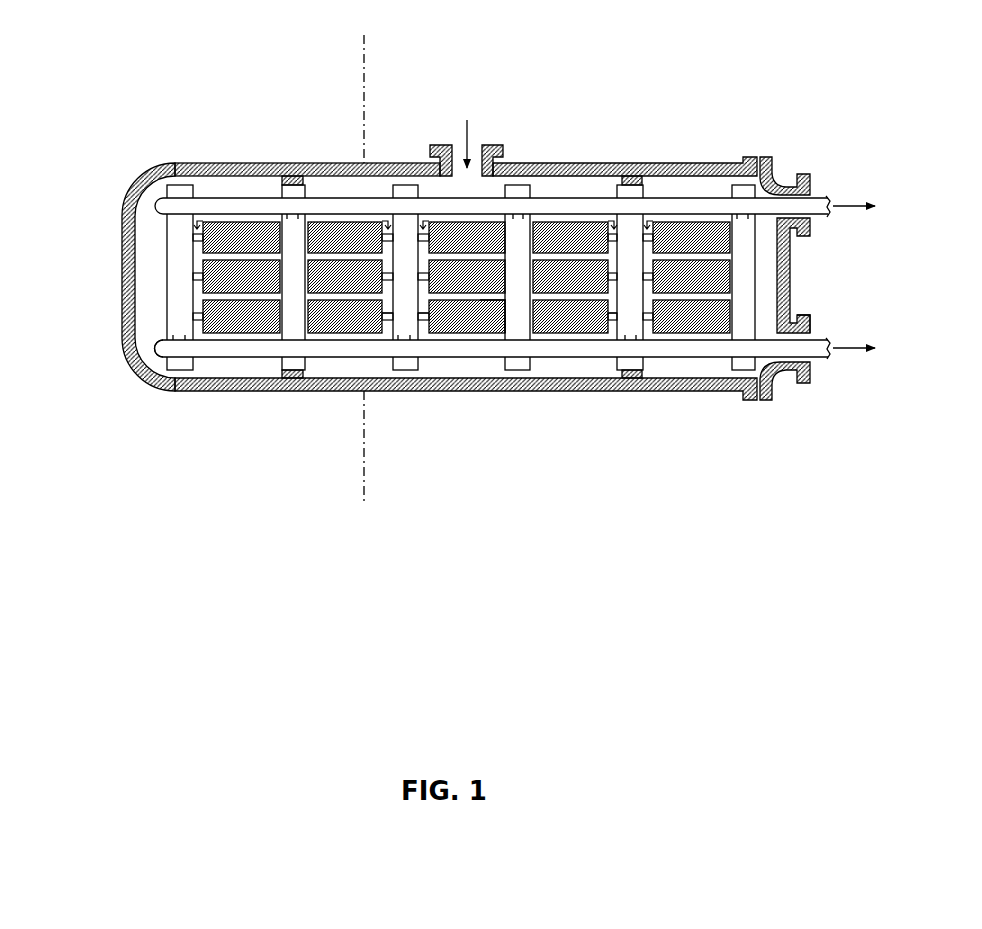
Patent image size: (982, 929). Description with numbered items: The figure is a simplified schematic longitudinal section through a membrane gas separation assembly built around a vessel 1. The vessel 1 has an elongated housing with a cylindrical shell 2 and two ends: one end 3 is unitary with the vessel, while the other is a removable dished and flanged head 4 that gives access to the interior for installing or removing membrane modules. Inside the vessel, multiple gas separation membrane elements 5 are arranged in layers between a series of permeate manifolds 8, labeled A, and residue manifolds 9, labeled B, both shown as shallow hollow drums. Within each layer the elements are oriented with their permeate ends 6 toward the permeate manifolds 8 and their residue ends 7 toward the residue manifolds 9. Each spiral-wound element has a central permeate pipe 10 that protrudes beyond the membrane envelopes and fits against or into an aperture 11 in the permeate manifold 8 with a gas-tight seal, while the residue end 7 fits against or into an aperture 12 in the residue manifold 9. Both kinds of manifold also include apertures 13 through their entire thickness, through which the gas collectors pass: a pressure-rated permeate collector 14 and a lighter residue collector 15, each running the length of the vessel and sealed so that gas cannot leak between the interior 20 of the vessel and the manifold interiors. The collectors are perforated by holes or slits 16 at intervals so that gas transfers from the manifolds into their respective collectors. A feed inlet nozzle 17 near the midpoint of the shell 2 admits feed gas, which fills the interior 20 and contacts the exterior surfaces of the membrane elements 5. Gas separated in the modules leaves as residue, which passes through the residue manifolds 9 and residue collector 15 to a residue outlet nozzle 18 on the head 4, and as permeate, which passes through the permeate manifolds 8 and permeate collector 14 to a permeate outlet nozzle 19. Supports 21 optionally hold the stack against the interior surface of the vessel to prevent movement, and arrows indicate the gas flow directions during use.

The vessel 1 is at (469, 270).
The cylindrical shell 2 is at (180, 392).
The end 3 is at (124, 322).
The removable dished and flanged head 4 is at (790, 272).
The gas separation membrane elements 5 is at (693, 333).
The permeate ends 6 is at (423, 328).
The residue ends 7 is at (498, 330).
The permeate manifolds 8 is at (166, 287).
The residue manifolds 9 is at (306, 365).
The permeate pipe 10 is at (387, 322).
The aperture 11 is at (615, 317).
The aperture 12 is at (287, 315).
The apertures 13 is at (778, 372).
The permeate collector 14 is at (830, 360).
The residue collector 15 is at (827, 197).
The holes or slits 16 is at (158, 347).
The feed inlet nozzle 17 is at (503, 152).
The residue outlet nozzle 18 is at (800, 175).
The permeate outlet nozzle 19 is at (810, 317).
The interior 20 is at (547, 372).
The supports 21 is at (642, 377).